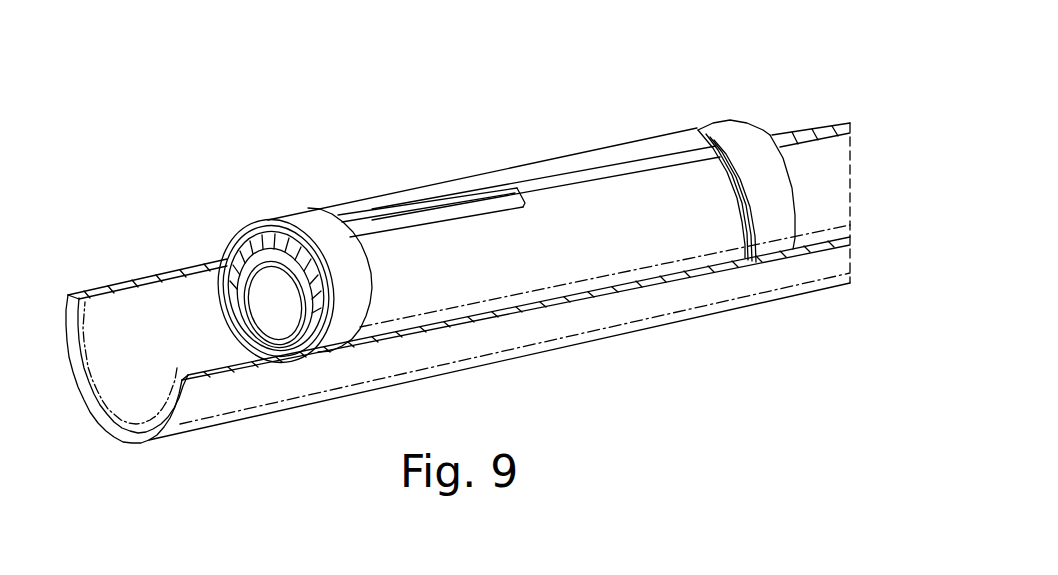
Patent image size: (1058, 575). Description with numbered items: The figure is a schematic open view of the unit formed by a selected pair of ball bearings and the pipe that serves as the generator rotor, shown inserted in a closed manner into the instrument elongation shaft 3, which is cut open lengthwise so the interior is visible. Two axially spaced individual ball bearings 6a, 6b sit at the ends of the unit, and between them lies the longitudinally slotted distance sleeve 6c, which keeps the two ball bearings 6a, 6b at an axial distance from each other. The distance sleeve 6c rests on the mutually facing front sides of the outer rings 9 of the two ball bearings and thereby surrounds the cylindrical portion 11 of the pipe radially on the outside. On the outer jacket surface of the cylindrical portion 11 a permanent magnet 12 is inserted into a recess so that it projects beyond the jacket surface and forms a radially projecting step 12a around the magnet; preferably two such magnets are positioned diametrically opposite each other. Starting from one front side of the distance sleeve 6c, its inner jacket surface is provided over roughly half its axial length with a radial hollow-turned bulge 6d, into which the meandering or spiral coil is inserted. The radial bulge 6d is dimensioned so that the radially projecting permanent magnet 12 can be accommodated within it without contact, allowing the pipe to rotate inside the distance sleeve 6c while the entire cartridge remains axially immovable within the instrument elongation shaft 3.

The instrument elongation shaft 3 is at (703, 290).
The ball bearing 6a is at (237, 222).
The ball bearing 6b is at (765, 124).
The distance sleeve 6c is at (637, 150).
The radial bulge 6d is at (494, 221).
The outer ring 9 is at (306, 232).
The cylindrical portion 11 is at (575, 222).
The permanent magnet 12 is at (473, 210).
The radially projecting step 12a is at (490, 227).